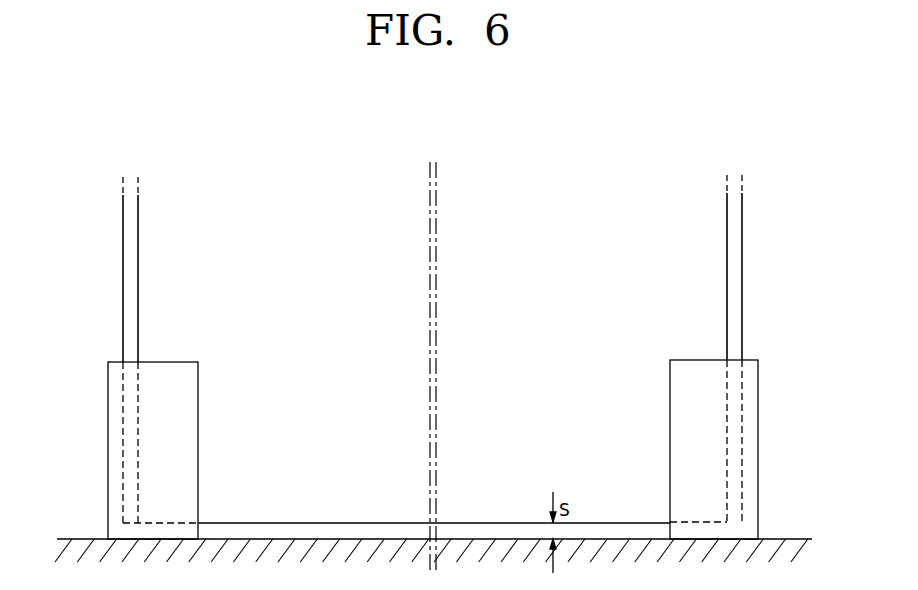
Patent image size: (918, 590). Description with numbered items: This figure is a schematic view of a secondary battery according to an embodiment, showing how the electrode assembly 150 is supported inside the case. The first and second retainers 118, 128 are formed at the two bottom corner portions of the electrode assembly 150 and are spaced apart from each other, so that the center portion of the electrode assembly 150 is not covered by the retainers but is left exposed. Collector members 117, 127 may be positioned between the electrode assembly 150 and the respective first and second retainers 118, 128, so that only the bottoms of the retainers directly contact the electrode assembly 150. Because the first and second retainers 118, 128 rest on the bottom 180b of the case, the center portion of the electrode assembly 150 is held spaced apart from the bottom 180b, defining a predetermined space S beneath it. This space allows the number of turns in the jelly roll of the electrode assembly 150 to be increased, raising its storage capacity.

The collector member 117 is at (737, 255).
The first retainer 118 is at (758, 431).
The collector member 127 is at (128, 257).
The second retainer 128 is at (108, 435).
The electrode assembly 150 is at (584, 422).
The bottom of the case 180b is at (782, 547).